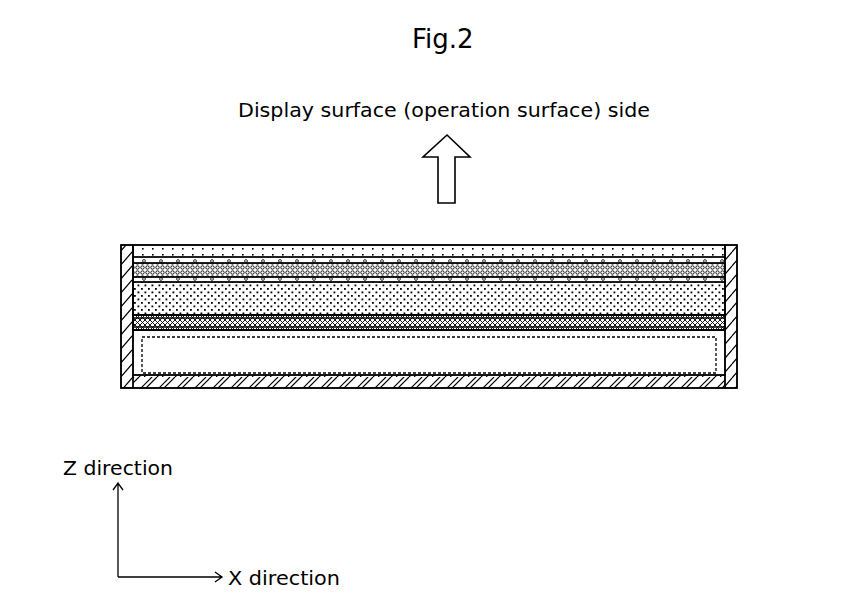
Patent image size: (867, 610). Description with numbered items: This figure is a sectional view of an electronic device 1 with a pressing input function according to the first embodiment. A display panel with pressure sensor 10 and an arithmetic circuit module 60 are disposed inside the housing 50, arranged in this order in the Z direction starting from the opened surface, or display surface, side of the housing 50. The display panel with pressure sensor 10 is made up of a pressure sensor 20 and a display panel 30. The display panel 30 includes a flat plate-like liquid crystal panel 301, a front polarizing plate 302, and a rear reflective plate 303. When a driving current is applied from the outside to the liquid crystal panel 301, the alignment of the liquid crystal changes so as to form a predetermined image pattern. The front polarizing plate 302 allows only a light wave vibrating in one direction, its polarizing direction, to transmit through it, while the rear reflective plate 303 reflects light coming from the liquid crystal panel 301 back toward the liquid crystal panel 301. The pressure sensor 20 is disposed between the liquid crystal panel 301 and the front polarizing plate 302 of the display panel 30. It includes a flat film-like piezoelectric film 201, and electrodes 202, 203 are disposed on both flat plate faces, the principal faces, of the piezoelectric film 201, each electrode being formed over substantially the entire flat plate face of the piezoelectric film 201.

The display device 1 is at (759, 159).
The display panel with pressure sensor 10 is at (651, 244).
The pressure sensor 20 is at (790, 242).
The electrode 202 is at (720, 256).
The piezoelectric film 201 is at (720, 268).
The electrode 203 is at (719, 280).
The display panel 30 is at (60, 252).
The front polarizing plate 302 is at (128, 250).
The liquid crystal panel 301 is at (133, 300).
The rear reflective plate 303 is at (133, 322).
The housing 50 is at (731, 362).
The arithmetic circuit module 60 is at (577, 378).